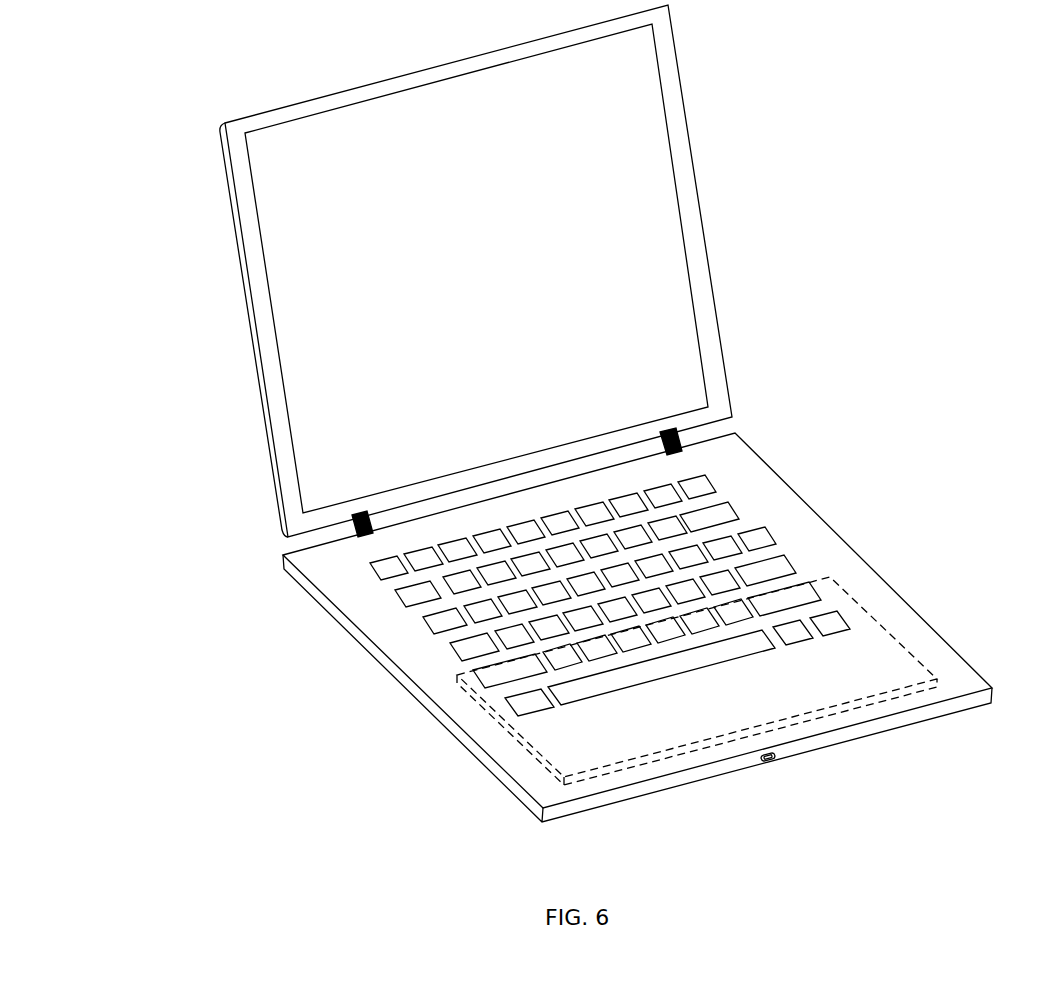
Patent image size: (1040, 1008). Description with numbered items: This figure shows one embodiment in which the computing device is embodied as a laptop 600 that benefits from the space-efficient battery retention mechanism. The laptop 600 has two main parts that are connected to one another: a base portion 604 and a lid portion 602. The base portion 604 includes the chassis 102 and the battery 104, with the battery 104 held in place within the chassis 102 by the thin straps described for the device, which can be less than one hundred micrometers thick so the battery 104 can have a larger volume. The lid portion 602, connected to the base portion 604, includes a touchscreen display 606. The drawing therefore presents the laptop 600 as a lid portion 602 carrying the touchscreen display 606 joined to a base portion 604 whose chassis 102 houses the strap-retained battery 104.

The laptop 600 is at (80, 99).
The lid portion 602 is at (208, 139).
The touchscreen display 606 is at (281, 282).
The base portion 604 is at (268, 640).
The chassis 102 is at (470, 744).
The battery 104 is at (567, 770).